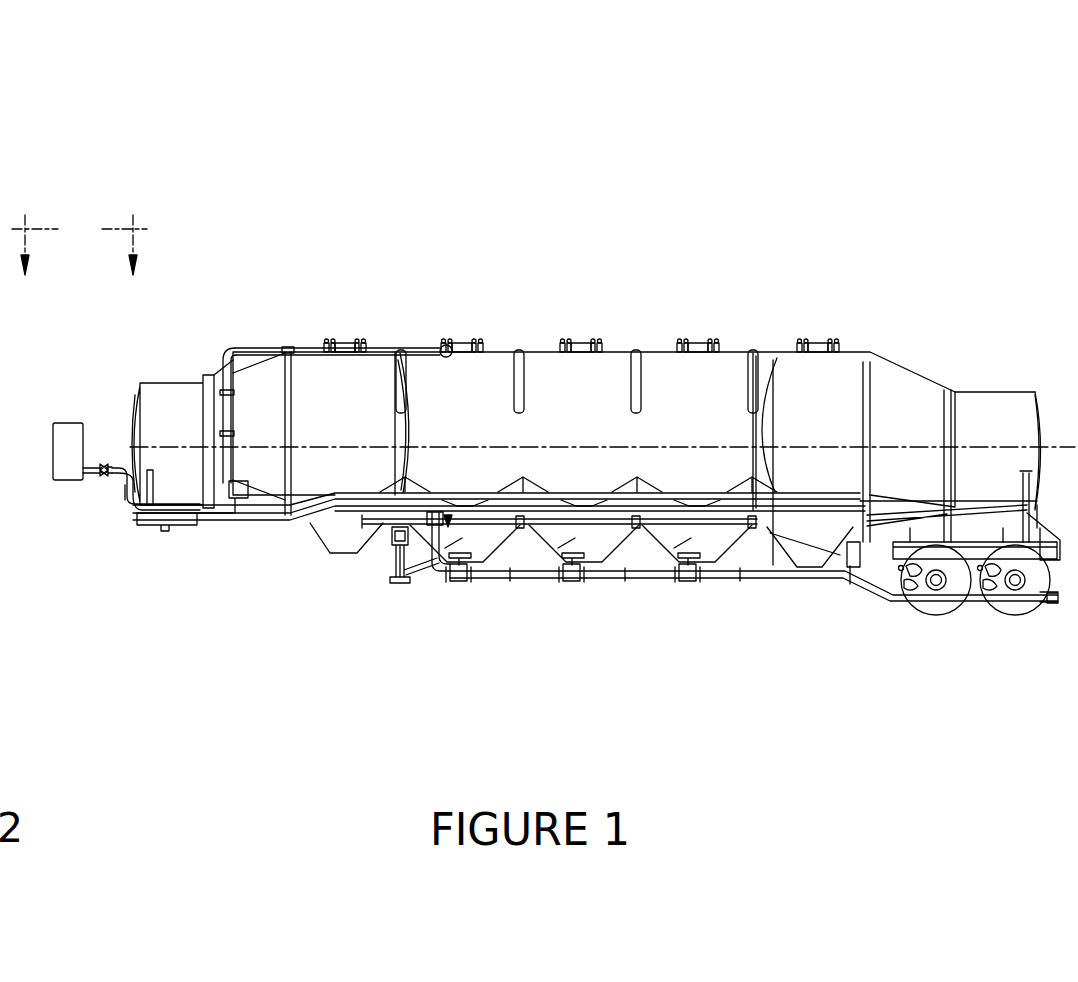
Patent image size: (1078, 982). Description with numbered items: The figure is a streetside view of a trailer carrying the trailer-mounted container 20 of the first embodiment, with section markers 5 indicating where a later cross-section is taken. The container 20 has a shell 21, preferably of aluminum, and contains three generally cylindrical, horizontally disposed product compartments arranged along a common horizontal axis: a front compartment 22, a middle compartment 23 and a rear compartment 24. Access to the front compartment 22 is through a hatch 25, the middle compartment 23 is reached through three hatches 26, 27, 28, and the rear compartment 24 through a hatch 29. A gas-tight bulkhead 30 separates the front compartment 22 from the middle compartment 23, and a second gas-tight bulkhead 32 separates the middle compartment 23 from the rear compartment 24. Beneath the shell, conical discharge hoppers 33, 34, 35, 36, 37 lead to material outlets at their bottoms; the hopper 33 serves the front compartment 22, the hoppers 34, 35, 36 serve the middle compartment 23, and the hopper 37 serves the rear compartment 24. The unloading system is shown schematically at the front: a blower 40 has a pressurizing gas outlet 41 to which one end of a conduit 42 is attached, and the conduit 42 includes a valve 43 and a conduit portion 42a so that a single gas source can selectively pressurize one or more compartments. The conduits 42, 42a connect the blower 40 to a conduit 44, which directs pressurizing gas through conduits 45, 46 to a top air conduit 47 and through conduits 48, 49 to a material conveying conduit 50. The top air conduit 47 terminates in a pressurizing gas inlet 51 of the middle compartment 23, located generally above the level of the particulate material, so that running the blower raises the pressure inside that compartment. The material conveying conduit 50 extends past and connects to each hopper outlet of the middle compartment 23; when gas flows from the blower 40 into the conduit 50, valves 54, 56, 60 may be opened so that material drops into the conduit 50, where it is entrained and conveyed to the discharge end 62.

The section line 5- 5 is at (79, 228).
The trailer-mounted container 20 is at (513, 185).
The shell 21 is at (928, 366).
The front compartment 22 is at (340, 388).
The middle compartment 23 is at (588, 393).
The rear compartment 24 is at (820, 387).
The hatch 25 is at (345, 338).
The hatch 26 is at (462, 338).
The hatch 27 is at (581, 338).
The hatch 28 is at (698, 338).
The hatch 29 is at (818, 338).
The bulkhead 30 is at (414, 436).
The bulkhead 32 is at (750, 424).
The conical discharge hopper 33 is at (347, 560).
The conical discharge hopper 34 is at (473, 541).
The conical discharge hopper 35 is at (590, 541).
The conical discharge hopper 36 is at (710, 540).
The conical discharge hopper 37 is at (823, 541).
The blower 40 is at (72, 437).
The pressurizing gas outlet 41 is at (83, 483).
The conduit 42 is at (100, 455).
The conduit portion 42a is at (120, 454).
The valve 43 is at (105, 484).
The conduit 44 is at (123, 526).
The conduit 45 is at (240, 497).
The conduit 46 is at (229, 418).
The top air conduit 47 is at (397, 340).
The conduit 48 is at (318, 545).
The conduit 49 is at (433, 573).
The material conveying conduit 50 is at (533, 576).
The pressurizing gas inlet 51 is at (452, 375).
The valve 54 is at (459, 592).
The valve 56 is at (581, 592).
The valve 60 is at (696, 592).
The discharge end 62 is at (1040, 620).